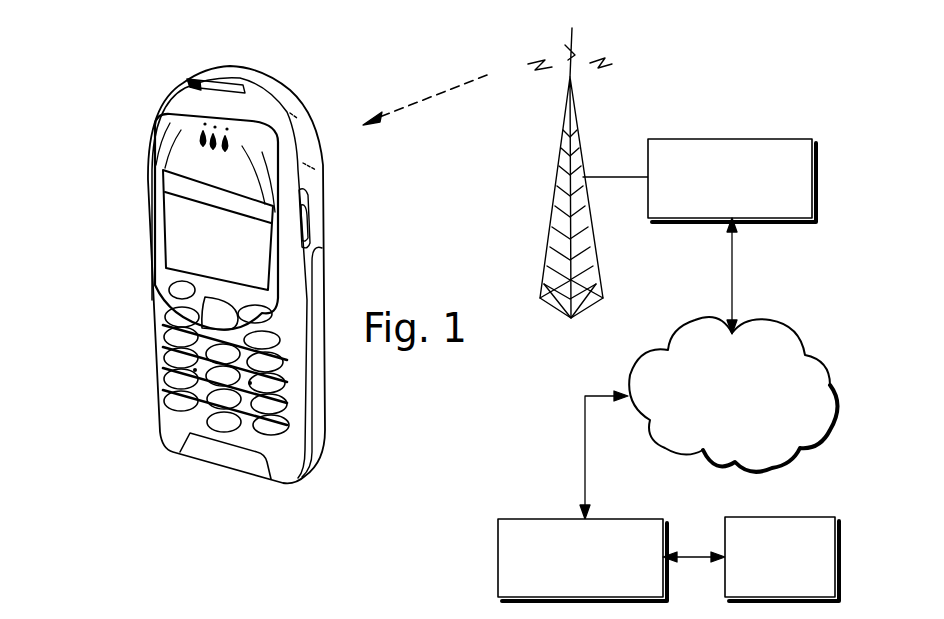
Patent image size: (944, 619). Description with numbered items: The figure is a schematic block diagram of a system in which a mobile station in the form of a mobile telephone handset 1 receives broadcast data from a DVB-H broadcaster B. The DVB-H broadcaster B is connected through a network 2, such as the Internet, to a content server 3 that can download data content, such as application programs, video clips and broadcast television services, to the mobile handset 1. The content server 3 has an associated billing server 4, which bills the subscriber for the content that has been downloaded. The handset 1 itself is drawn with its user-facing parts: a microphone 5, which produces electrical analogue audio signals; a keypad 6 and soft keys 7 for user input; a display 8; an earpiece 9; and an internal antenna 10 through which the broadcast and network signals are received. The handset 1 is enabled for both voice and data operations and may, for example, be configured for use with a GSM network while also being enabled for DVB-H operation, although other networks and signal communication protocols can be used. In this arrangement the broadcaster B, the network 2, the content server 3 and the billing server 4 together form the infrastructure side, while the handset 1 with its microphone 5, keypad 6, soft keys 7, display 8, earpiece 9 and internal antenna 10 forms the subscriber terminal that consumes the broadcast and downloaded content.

The mobile telephone handset 1 is at (316, 407).
The network 2 is at (733, 394).
The content server 3 is at (540, 519).
The billing server 4 is at (783, 516).
The microphone 5 is at (227, 467).
The keypad 6 is at (165, 372).
The soft keys 7 is at (173, 288).
The display 8 is at (183, 230).
The earpiece 9 is at (203, 122).
The internal antenna 10 is at (300, 130).
The DVB-H broadcaster B is at (685, 139).